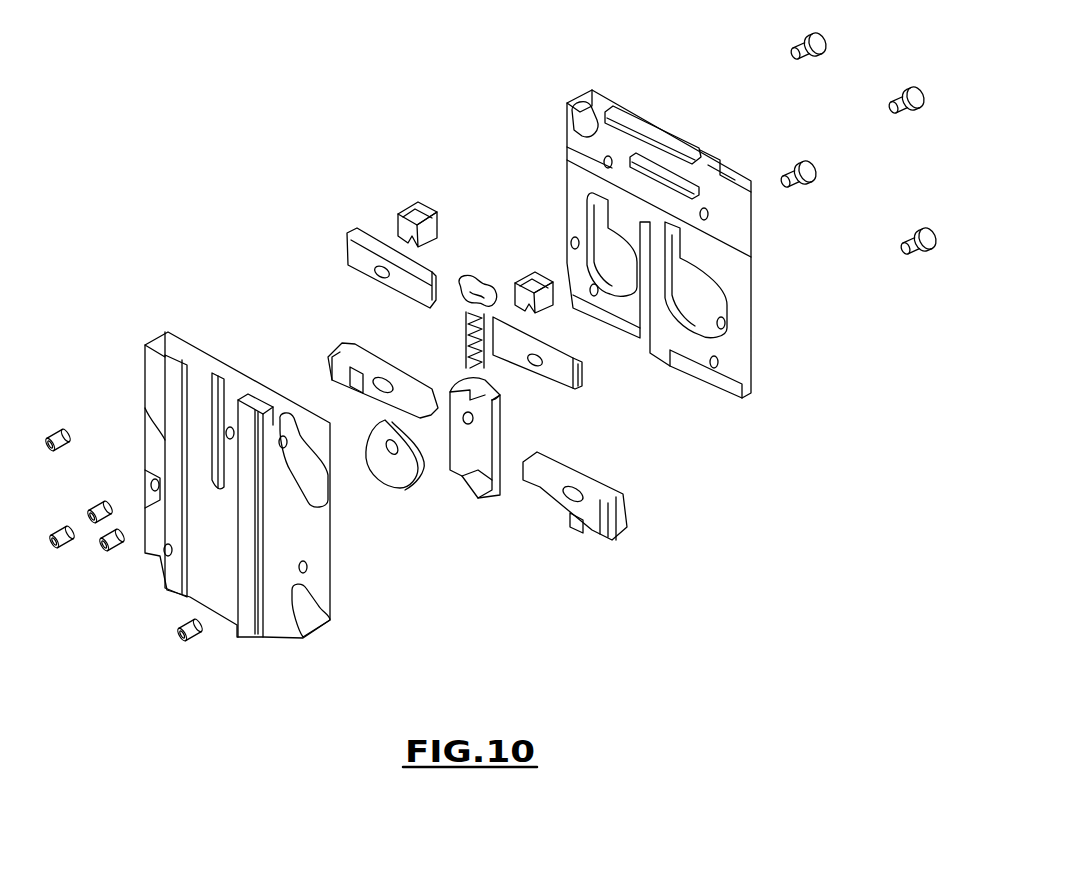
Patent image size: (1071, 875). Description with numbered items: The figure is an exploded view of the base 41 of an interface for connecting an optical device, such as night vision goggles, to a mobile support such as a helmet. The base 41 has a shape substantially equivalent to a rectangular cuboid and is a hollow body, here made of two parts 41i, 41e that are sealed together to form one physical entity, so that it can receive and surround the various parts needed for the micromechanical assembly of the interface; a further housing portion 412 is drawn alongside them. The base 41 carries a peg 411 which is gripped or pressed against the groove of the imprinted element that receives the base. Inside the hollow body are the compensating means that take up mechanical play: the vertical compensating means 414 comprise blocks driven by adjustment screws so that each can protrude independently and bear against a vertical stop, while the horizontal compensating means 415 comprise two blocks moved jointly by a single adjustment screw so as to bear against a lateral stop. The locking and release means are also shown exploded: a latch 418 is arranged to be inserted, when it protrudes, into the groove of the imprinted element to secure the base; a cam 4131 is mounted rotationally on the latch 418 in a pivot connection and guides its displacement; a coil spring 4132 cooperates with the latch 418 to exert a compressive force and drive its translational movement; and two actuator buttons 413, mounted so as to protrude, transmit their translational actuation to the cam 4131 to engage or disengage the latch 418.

The base 41 is at (487, 355).
The peg 411 is at (714, 221).
The first housing half 412 is at (182, 500).
The actuator button 413 is at (434, 439).
The vertical compensating means 414 is at (415, 212).
The horizontal compensating means 415 is at (441, 292).
The latch 418 is at (525, 523).
The cam 4131 is at (346, 562).
The coil spring 4132 is at (614, 392).
The part of the hollow body 41e is at (100, 402).
The part of the hollow body 41i is at (717, 366).